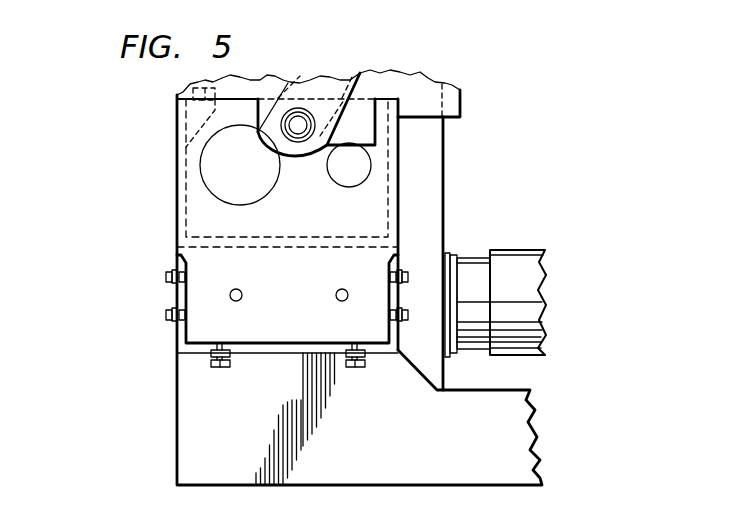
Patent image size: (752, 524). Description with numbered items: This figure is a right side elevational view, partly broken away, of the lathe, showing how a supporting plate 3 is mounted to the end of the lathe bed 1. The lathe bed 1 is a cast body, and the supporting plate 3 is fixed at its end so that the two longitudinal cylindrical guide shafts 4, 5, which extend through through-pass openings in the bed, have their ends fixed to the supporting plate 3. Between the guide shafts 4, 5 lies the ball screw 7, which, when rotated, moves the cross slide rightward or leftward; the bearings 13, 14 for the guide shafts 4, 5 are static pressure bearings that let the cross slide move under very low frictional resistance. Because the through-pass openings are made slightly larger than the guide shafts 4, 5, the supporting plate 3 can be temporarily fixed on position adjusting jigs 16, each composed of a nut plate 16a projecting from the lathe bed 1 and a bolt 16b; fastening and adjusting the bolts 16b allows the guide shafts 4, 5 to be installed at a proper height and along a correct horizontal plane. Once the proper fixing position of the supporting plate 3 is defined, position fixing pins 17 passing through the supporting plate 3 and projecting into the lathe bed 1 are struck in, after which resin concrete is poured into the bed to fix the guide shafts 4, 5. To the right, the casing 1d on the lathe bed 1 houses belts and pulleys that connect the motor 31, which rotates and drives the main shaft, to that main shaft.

The lathe bed 1 is at (348, 436).
The casing 1d is at (433, 191).
The supporting plate 3 is at (297, 287).
The guide shaft 4 is at (266, 190).
The guide shaft 5 is at (354, 177).
The ball screw 7 is at (299, 130).
The bearing 13 is at (334, 108).
The bearing 14 is at (260, 110).
The position adjusting jig 16 is at (90, 295).
The nut plate 16a is at (230, 356).
The bolt 16b is at (166, 277).
The position fixing pin 17 is at (240, 301).
The motor 31 is at (507, 263).